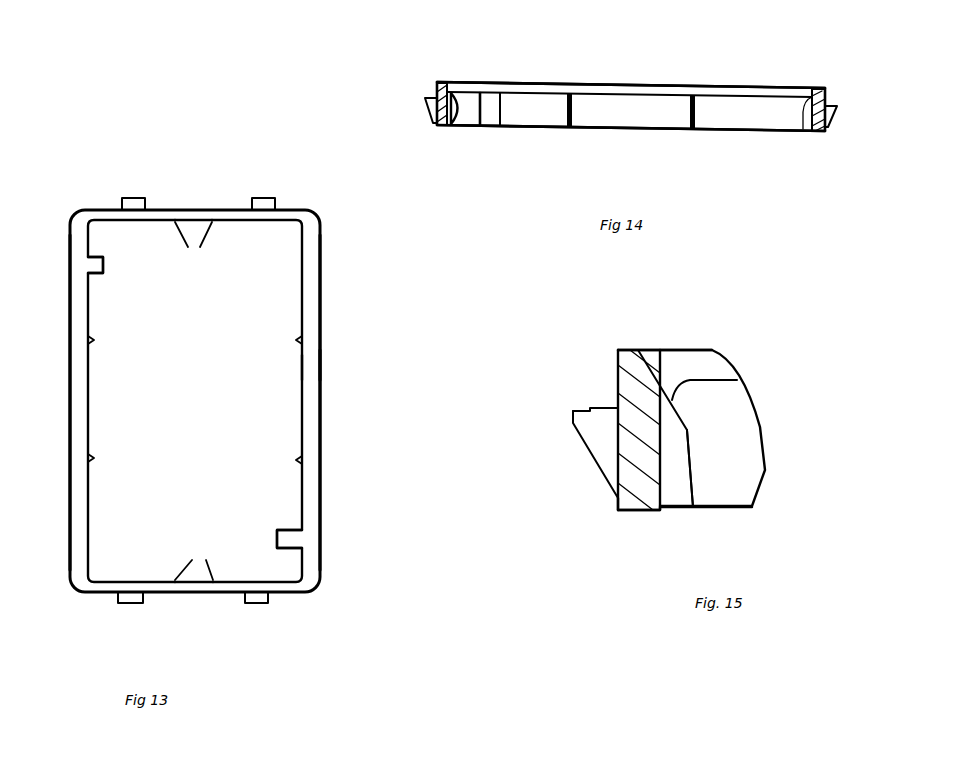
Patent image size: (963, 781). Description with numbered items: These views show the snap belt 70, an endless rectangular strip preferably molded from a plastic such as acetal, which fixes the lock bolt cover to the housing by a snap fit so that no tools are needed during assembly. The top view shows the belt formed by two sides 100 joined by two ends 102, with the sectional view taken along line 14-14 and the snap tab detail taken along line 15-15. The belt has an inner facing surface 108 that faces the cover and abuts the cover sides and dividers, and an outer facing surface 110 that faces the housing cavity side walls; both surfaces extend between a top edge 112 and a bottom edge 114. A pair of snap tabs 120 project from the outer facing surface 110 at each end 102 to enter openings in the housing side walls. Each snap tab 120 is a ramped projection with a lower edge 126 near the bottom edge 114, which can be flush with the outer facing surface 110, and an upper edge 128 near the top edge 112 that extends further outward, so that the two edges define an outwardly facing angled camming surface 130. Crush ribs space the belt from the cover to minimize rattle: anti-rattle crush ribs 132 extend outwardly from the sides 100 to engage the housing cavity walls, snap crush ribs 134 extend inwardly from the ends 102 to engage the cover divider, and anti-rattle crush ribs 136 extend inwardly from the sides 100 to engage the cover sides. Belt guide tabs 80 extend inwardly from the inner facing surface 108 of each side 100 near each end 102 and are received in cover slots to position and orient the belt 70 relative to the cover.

In FIG. 13, the section line 14- 14 is at (146, 625).
In FIG. 14, the detail line 15- 15 is at (424, 67).
In FIG. 13, the snap belt 70 is at (378, 300).
In FIG. 14, the snap belt 70 is at (798, 36).
In FIG. 15, the snap belt 70 is at (752, 334).
In FIG. 13, the belt guide tab 80 is at (104, 273).
In FIG. 14, the belt guide tab 80 is at (494, 114).
In FIG. 13, the side 100 is at (72, 432).
In FIG. 14, the side 100 is at (766, 118).
In FIG. 15, the side 100 is at (748, 410).
In FIG. 14, the end 102 is at (824, 96).
In FIG. 15, the end 102 is at (632, 385).
In FIG. 13, the inner facing surface 108 is at (300, 370).
In FIG. 14, the inner facing surface 108 is at (660, 120).
In FIG. 13, the outer facing surface 110 is at (322, 362).
In FIG. 14, the top edge 112 is at (660, 84).
In FIG. 15, the top edge 112 is at (662, 348).
In FIG. 14, the bottom edge 114 is at (656, 132).
In FIG. 15, the bottom edge 114 is at (652, 512).
In FIG. 13, the snap tab 120 is at (124, 200).
In FIG. 14, the snap tab 120 is at (425, 99).
In FIG. 15, the lower edge 126 is at (620, 498).
In FIG. 15, the upper edge 128 is at (590, 407).
In FIG. 15, the angled camming surface 130 is at (594, 458).
In FIG. 13, the anti-rattle crush rib 132 is at (70, 283).
In FIG. 13, the snap crush rib 134 is at (195, 401).
In FIG. 14, the snap crush rib 134 is at (460, 128).
In FIG. 15, the snap crush rib 134 is at (684, 486).
In FIG. 13, the anti-rattle crush rib 136 is at (94, 340).
In FIG. 14, the anti-rattle crush rib 136 is at (575, 118).